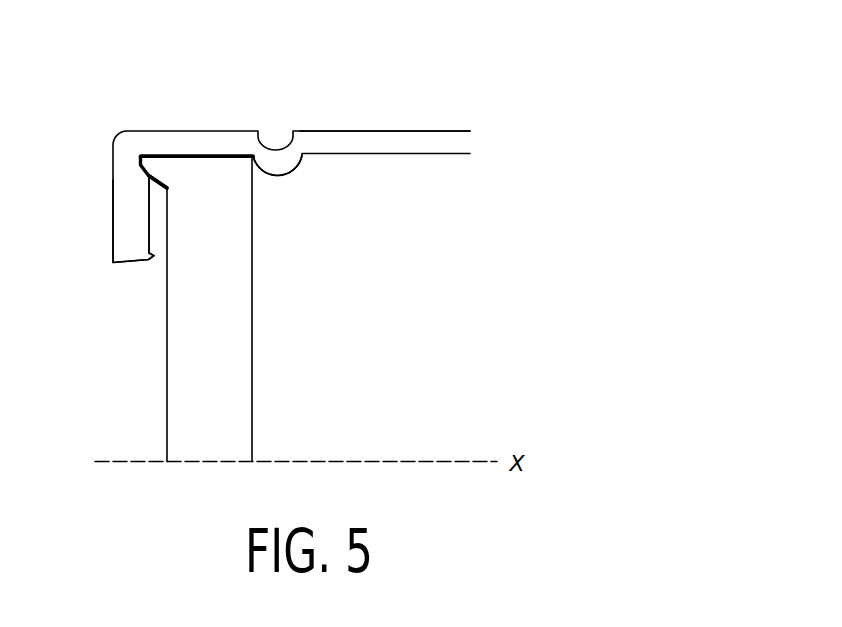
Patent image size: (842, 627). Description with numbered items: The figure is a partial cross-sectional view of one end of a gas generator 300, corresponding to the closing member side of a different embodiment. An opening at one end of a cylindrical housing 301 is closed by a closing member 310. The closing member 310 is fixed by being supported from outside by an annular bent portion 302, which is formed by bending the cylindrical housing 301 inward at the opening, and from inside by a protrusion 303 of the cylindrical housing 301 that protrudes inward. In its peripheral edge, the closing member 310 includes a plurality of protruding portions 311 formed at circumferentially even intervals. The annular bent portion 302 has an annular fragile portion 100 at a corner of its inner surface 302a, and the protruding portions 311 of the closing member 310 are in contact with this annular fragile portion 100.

The annular fragile portion 100 is at (155, 152).
The gas generator 300 is at (417, 118).
The cylindrical housing 301 is at (338, 130).
The annular bent portion 302 is at (132, 244).
The inner surface 302a is at (150, 224).
The protrusion 303 is at (290, 177).
The closing member 310 is at (232, 329).
The protruding portions 311 is at (151, 163).